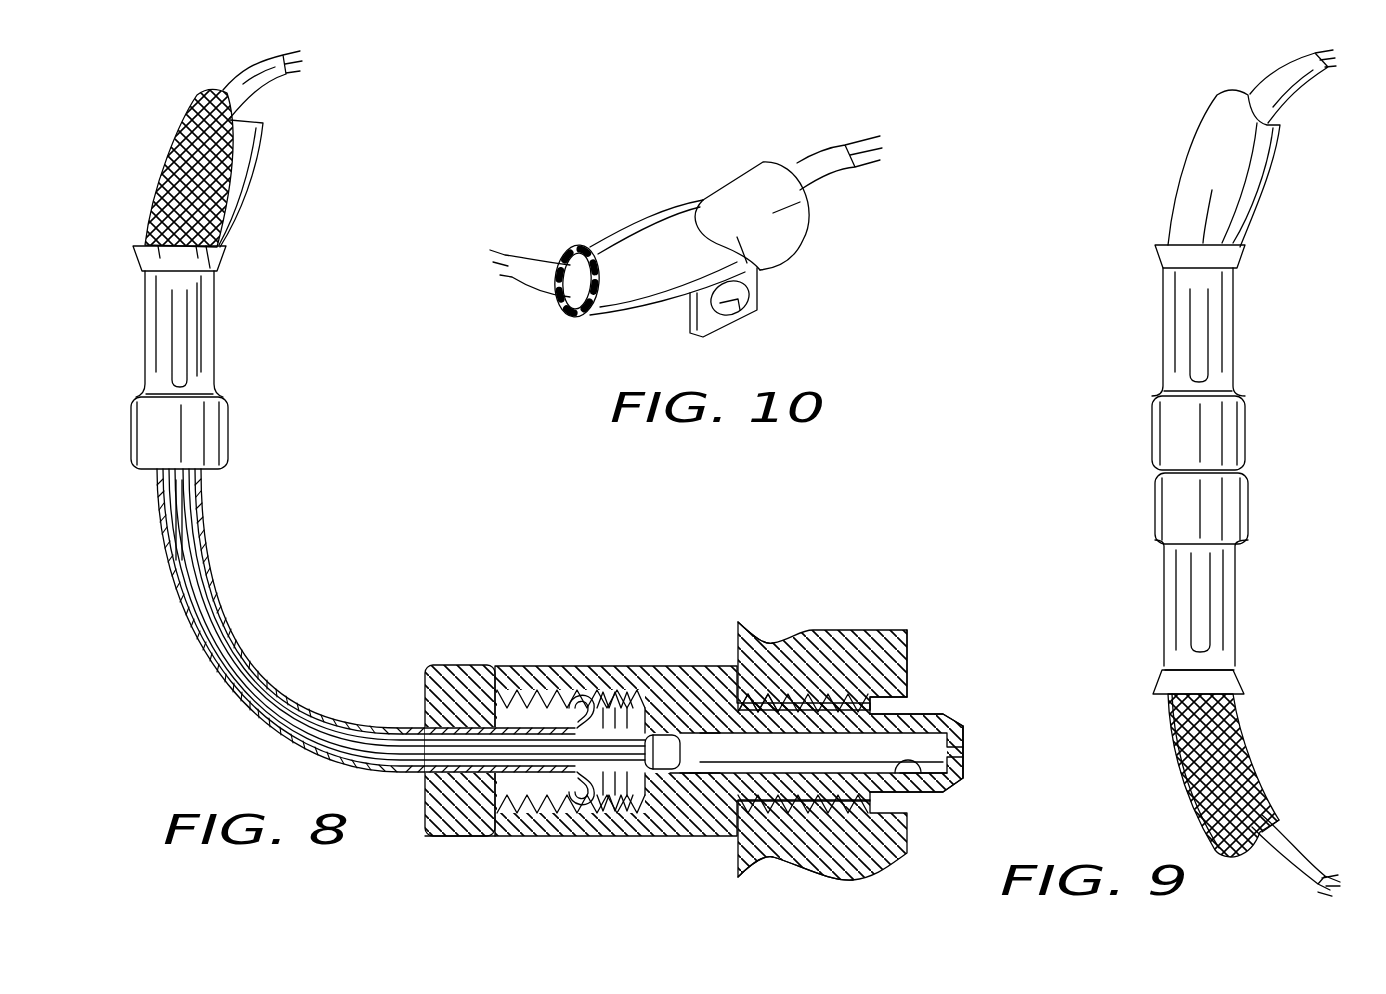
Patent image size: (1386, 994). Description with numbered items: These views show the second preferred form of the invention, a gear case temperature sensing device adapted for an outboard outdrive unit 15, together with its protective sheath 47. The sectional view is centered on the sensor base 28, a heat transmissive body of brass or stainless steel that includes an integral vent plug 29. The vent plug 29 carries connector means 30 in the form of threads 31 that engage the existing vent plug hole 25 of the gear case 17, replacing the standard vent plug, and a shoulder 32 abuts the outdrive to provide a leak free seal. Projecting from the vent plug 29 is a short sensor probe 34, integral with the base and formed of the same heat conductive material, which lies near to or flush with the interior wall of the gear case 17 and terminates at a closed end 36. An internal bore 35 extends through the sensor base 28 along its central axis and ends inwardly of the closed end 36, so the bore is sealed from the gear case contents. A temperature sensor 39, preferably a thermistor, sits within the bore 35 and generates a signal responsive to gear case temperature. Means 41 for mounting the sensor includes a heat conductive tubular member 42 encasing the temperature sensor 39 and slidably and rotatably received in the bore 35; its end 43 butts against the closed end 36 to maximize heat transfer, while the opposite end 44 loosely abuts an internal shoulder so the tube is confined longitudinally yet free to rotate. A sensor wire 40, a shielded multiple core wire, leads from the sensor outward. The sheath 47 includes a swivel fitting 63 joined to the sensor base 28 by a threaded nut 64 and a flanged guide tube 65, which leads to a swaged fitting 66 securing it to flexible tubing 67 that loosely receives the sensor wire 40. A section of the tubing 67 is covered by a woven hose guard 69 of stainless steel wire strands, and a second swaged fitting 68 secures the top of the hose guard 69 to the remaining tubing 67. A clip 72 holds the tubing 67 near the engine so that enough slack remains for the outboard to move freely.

In FIG. 8, the outboard outdrive unit 15 is at (858, 622).
In FIG. 8, the gear case 17 is at (910, 660).
In FIG. 8, the vent plug hole 25 is at (913, 700).
In FIG. 8, the sensor base 28 is at (611, 836).
In FIG. 8, the vent plug 29 is at (697, 762).
In FIG. 8, the connector means 30 is at (768, 860).
In FIG. 8, the threads 31 is at (783, 707).
In FIG. 8, the shoulder 32 is at (780, 641).
In FIG. 8, the sensor probe 34 is at (950, 714).
In FIG. 8, the internal bore 35 is at (908, 774).
In FIG. 8, the closed end 36 is at (963, 735).
In FIG. 8, the temperature sensor 39 is at (659, 740).
In FIG. 8, the sensor wire 40 is at (242, 80).
In FIG. 10, the sensor wire 40 is at (542, 273).
In FIG. 9, the sensor wire 40 is at (1270, 83).
In FIG. 8, the means for mounting the temperature sensor 41 is at (705, 732).
In FIG. 8, the tubular member 42 is at (683, 792).
In FIG. 8, the end of tube 43 is at (940, 798).
In FIG. 8, the opposite end 44 is at (600, 705).
In FIG. 8, the sheath 47 is at (239, 338).
In FIG. 9, the sheath 47 is at (1259, 611).
In FIG. 8, the swivel fitting 63 is at (438, 638).
In FIG. 8, the threaded nut 64 is at (462, 830).
In FIG. 8, the flanged guide tube 65 is at (245, 661).
In FIG. 8, the swaged fitting 66 is at (156, 435).
In FIG. 8, the flexible tubing 67 is at (232, 196).
In FIG. 9, the flexible tubing 67 is at (1178, 787).
In FIG. 9, the second swaged fitting 68 is at (1182, 506).
In FIG. 8, the woven hose guard 69 is at (165, 152).
In FIG. 9, the woven hose guard 69 is at (1241, 736).
In FIG. 10, the clip 72 is at (747, 193).